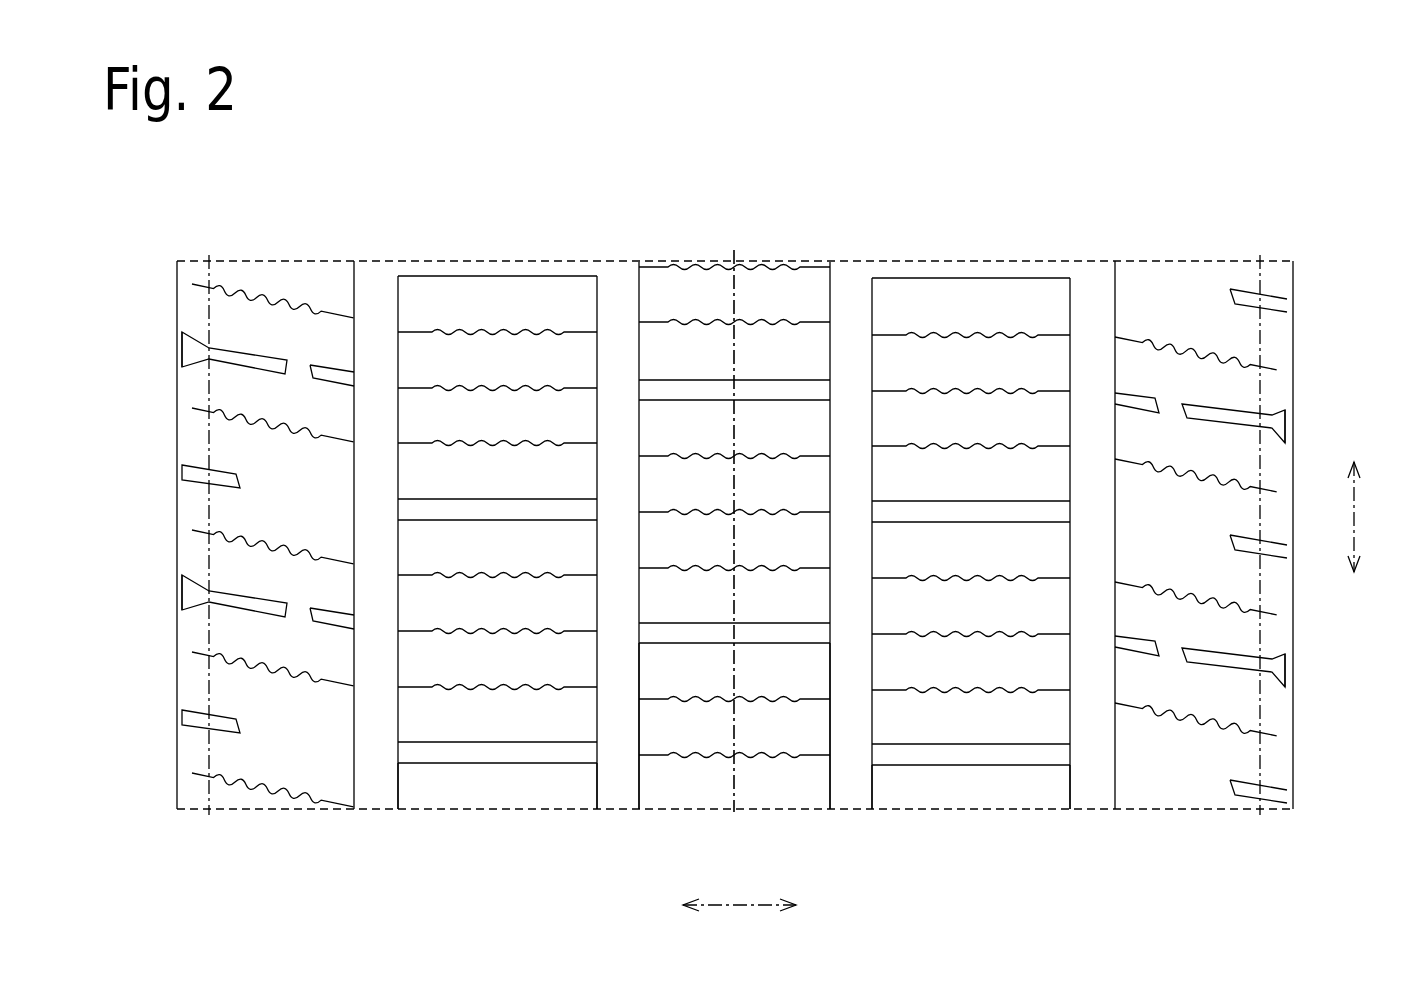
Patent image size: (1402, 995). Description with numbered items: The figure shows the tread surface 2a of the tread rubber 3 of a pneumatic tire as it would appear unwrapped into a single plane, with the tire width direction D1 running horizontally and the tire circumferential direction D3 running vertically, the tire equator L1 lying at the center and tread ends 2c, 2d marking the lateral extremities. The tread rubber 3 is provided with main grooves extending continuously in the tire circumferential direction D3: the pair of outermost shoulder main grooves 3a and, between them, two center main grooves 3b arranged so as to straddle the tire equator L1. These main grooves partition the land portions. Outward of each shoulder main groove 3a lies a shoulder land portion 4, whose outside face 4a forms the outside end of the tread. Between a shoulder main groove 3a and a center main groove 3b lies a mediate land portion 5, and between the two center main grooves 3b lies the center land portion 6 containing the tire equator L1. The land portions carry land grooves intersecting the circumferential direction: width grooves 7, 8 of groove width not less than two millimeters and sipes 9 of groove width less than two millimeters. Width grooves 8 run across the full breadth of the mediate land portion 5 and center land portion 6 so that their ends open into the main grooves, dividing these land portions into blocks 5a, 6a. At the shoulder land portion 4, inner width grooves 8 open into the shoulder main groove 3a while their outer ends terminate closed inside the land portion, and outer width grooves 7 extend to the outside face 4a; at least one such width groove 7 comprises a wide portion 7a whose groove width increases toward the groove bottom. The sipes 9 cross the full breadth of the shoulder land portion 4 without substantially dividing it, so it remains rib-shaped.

The tread surface 2a is at (1240, 638).
The tread end 2c is at (205, 749).
The tread end 2d is at (1257, 770).
The tread rubber 3 is at (1290, 262).
The shoulder main groove 3a is at (378, 262).
The center main groove 3b is at (617, 262).
The shoulder land portion 4 is at (262, 262).
The outside face 4a is at (187, 686).
The mediate land portion 5 is at (497, 280).
The block 5a is at (438, 745).
The center land portion 6 is at (701, 262).
The block 6a is at (810, 795).
The width groove 7 is at (232, 592).
The wide portion 7a is at (196, 576).
The width groove 8 is at (222, 470).
The sipe 9 is at (425, 445).
The tire equator L1 is at (732, 792).
The tire width direction D1 is at (739, 918).
The tire circumferential direction D3 is at (1369, 517).